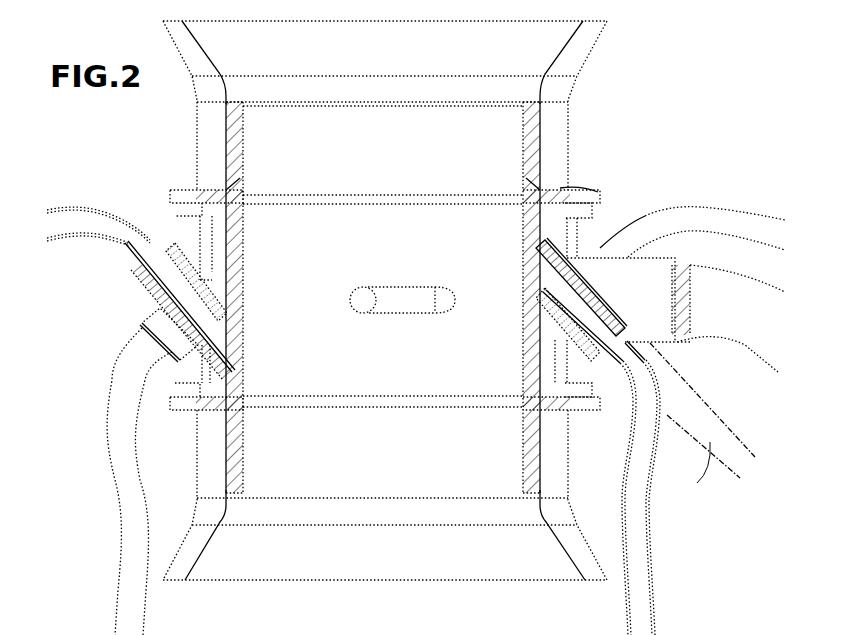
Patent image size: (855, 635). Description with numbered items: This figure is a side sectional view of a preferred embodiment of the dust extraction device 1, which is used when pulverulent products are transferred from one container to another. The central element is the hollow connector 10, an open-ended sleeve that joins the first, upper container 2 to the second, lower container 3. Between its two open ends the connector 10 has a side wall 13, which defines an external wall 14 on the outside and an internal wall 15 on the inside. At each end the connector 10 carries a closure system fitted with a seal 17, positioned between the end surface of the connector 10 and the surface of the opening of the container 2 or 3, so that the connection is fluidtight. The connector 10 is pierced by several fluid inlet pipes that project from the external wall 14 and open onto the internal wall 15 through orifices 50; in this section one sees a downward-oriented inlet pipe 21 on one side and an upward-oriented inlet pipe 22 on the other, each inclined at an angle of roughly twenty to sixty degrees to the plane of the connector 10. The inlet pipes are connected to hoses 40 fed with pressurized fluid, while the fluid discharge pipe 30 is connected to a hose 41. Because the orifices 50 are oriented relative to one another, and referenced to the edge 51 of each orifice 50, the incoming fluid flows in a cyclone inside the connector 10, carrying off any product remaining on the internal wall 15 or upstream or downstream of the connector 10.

The dust extraction device 1 is at (75, 447).
The first container 2 is at (408, 56).
The second container 3 is at (408, 565).
The hollow connector 10 is at (126, 322).
The side wall 13 is at (246, 256).
The external wall 14 is at (228, 228).
The internal wall 15 is at (404, 357).
The seal 17 is at (597, 200).
The downward-oriented inlet pipe 21 is at (145, 270).
The upward-oriented inlet pipe 22 is at (618, 310).
The fluid discharge pipe 30 is at (655, 270).
The hose 40 is at (87, 213).
The hose 41 is at (748, 335).
The orifice 50 is at (398, 298).
The edge of the orifice 51 is at (365, 298).